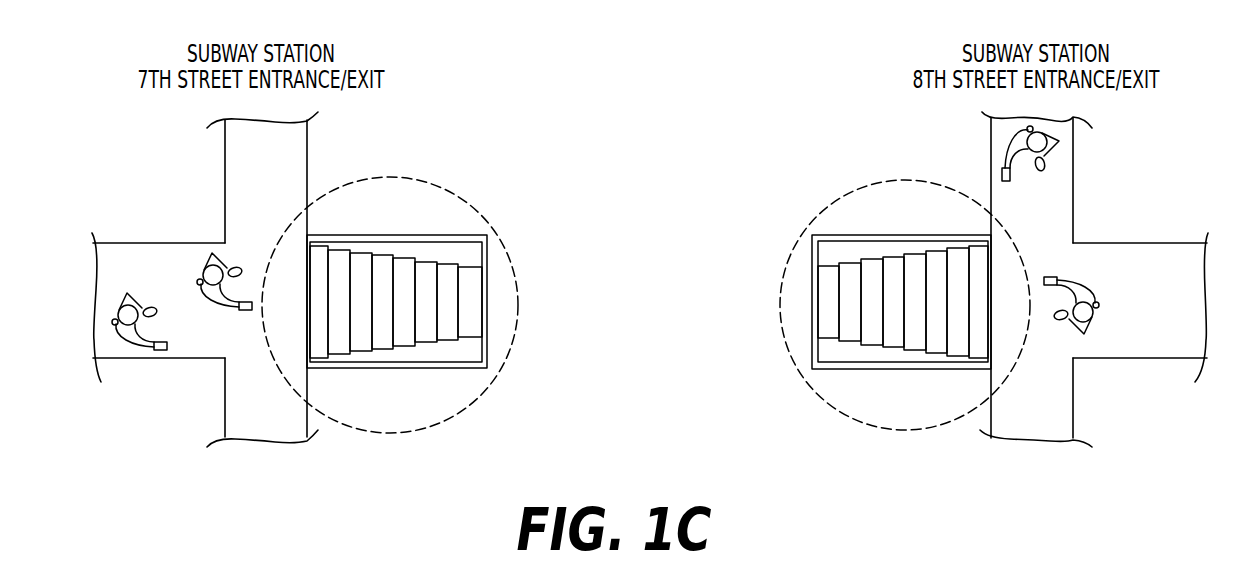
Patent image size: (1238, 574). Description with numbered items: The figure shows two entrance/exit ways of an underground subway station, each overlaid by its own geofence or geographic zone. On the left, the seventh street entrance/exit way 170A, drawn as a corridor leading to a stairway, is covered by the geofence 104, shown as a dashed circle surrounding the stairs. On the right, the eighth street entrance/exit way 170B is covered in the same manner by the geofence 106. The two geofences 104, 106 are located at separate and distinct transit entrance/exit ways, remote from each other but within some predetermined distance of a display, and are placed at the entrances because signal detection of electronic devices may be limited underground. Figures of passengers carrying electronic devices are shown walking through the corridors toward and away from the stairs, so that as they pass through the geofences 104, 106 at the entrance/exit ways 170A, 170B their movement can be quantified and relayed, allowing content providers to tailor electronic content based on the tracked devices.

The geofence 104 is at (453, 197).
The geofence 106 is at (897, 180).
The entrance/exit way 170A is at (338, 347).
The entrance/exit way 170B is at (913, 338).